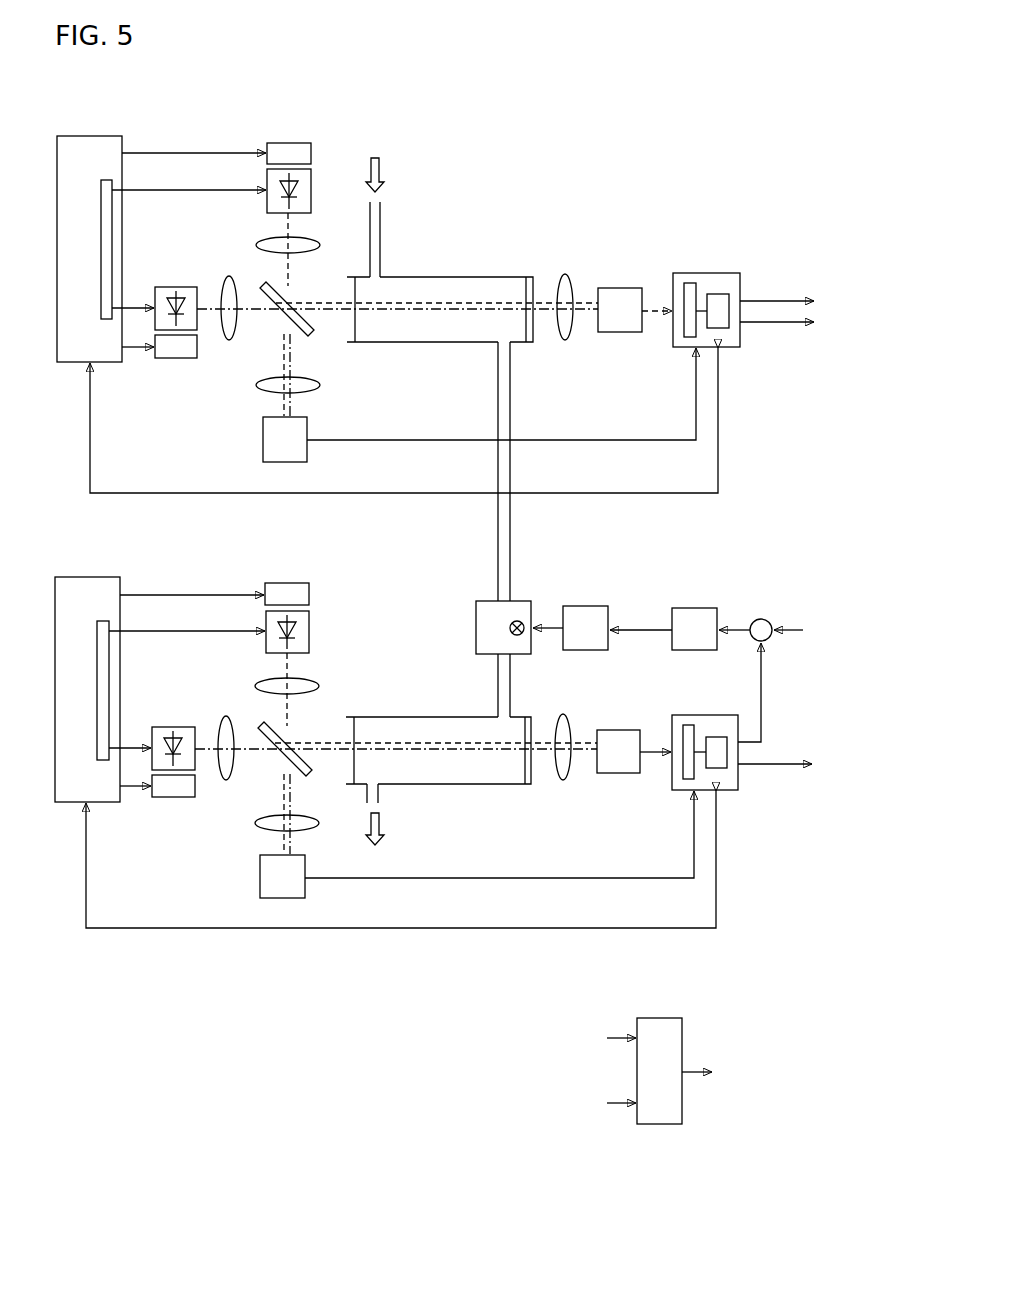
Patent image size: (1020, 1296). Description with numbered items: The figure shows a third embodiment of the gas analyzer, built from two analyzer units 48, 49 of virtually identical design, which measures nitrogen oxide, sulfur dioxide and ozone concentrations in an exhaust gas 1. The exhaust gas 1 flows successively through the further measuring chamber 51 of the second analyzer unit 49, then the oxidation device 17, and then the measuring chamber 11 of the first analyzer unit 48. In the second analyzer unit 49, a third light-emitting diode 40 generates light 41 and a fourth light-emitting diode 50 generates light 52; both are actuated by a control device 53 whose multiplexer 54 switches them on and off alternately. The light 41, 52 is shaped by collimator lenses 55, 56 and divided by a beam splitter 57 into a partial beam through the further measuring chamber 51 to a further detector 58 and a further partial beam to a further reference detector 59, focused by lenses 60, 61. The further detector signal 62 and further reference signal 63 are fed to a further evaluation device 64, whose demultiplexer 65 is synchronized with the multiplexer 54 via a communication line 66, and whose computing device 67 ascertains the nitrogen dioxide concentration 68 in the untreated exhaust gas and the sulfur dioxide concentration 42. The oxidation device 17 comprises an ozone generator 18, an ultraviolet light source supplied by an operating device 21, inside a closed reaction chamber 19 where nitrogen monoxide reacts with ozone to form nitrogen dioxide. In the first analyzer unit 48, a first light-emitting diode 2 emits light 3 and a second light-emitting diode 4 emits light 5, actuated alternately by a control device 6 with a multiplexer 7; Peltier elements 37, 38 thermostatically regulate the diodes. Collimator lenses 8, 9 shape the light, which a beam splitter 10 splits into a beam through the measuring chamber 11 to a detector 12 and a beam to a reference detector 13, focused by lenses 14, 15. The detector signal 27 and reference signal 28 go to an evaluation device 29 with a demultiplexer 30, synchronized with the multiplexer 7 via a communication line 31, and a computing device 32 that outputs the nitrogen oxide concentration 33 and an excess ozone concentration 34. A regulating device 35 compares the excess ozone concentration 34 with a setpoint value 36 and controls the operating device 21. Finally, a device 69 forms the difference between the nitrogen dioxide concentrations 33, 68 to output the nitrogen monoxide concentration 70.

The exhaust gas 1 is at (382, 168).
The first light-emitting diode 2 is at (173, 726).
The light 3 is at (252, 758).
The second light-emitting diode 4 is at (312, 632).
The light 5 is at (291, 716).
The control device 6 is at (88, 577).
The multiplexer 7 is at (96, 690).
The collimator lens 8 is at (221, 724).
The collimator lens 9 is at (319, 683).
The beam splitter 10 is at (294, 766).
The measuring chamber 11 is at (431, 716).
The detector 12 is at (620, 729).
The reference detector 13 is at (258, 885).
The lens 14 is at (568, 722).
The lens 15 is at (258, 826).
The oxidation device 17 is at (451, 595).
The ozone generator 18 is at (520, 621).
The reaction chamber 19 is at (475, 628).
The operating device 21 is at (584, 605).
The detector signal 27 is at (653, 758).
The reference signal 28 is at (688, 845).
The evaluation device 29 is at (730, 792).
The demultiplexer 30 is at (689, 724).
The communication line 31 is at (453, 927).
The computing device 32 is at (716, 736).
The nitrogen oxide concentration 33 is at (795, 768).
The excess ozone concentration 34 is at (763, 720).
The regulating device 35 is at (695, 607).
The setpoint value 36 is at (794, 636).
The Peltier element 37 is at (171, 798).
The Peltier element 38 is at (288, 582).
The third light-emitting diode 40 is at (313, 193).
The light 41 is at (292, 272).
The sulfur dioxide concentration 42 is at (792, 324).
The analyzer unit 48 is at (346, 961).
The analyzer unit 49 is at (513, 187).
The fourth light-emitting diode 50 is at (175, 286).
The further measuring chamber 51 is at (431, 276).
The light 52 is at (254, 318).
The control device 53 is at (90, 136).
The multiplexer 54 is at (100, 250).
The collimator lens 55 is at (320, 243).
The collimator lens 56 is at (223, 287).
The beam splitter 57 is at (296, 326).
The further detector 58 is at (620, 287).
The further reference detector 59 is at (260, 444).
The lens 60 is at (572, 280).
The lens 61 is at (258, 388).
The further detector signal 62 is at (653, 318).
The further reference signal 63 is at (690, 405).
The further evaluation device 64 is at (732, 348).
The demultiplexer 65 is at (690, 282).
The communication line 66 is at (431, 492).
The computing device 67 is at (716, 293).
The nitrogen dioxide concentration 68 is at (788, 300).
The device 69 is at (659, 1017).
The nitrogen monoxide concentration 70 is at (697, 1071).